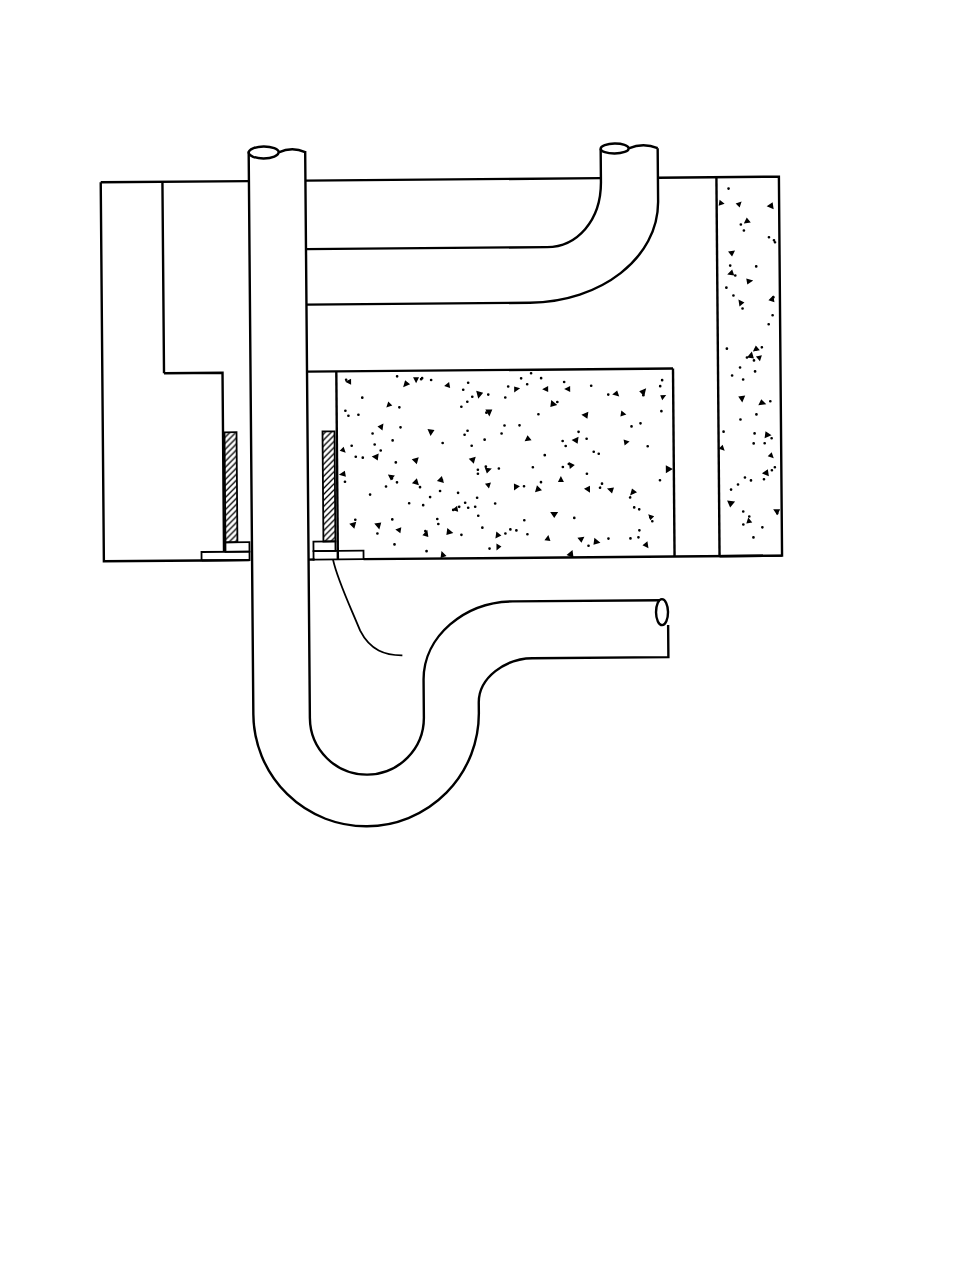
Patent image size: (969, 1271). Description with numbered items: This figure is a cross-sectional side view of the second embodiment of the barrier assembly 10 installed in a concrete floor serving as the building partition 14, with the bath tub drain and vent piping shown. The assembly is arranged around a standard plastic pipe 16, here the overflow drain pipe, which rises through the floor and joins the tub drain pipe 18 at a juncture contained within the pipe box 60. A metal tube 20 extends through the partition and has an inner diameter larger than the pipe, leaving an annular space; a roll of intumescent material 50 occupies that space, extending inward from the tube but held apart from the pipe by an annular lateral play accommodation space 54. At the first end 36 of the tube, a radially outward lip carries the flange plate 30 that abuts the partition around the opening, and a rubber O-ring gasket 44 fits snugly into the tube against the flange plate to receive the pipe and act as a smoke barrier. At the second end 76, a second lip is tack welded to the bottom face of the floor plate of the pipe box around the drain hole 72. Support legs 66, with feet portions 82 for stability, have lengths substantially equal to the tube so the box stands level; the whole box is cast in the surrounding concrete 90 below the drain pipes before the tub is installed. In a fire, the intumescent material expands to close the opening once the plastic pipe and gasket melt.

The barrier assembly 10 is at (472, 116).
The building partition 14 is at (135, 180).
The plastic pipe 16 is at (259, 681).
The tub drain pipe 18 is at (513, 259).
The metal tube 20 is at (332, 385).
The flange plate 30 is at (198, 550).
The first end 36 is at (250, 563).
The O-ring gasket 44 is at (236, 543).
The intumescent material 50 is at (224, 496).
The lateral play accommodation space 54 is at (317, 475).
The pipe box 60 is at (198, 115).
The support legs 66 is at (696, 512).
The drain hole 72 is at (315, 386).
The second end 76 is at (337, 387).
The feet portions 82 is at (732, 556).
The concrete 90 is at (144, 442).